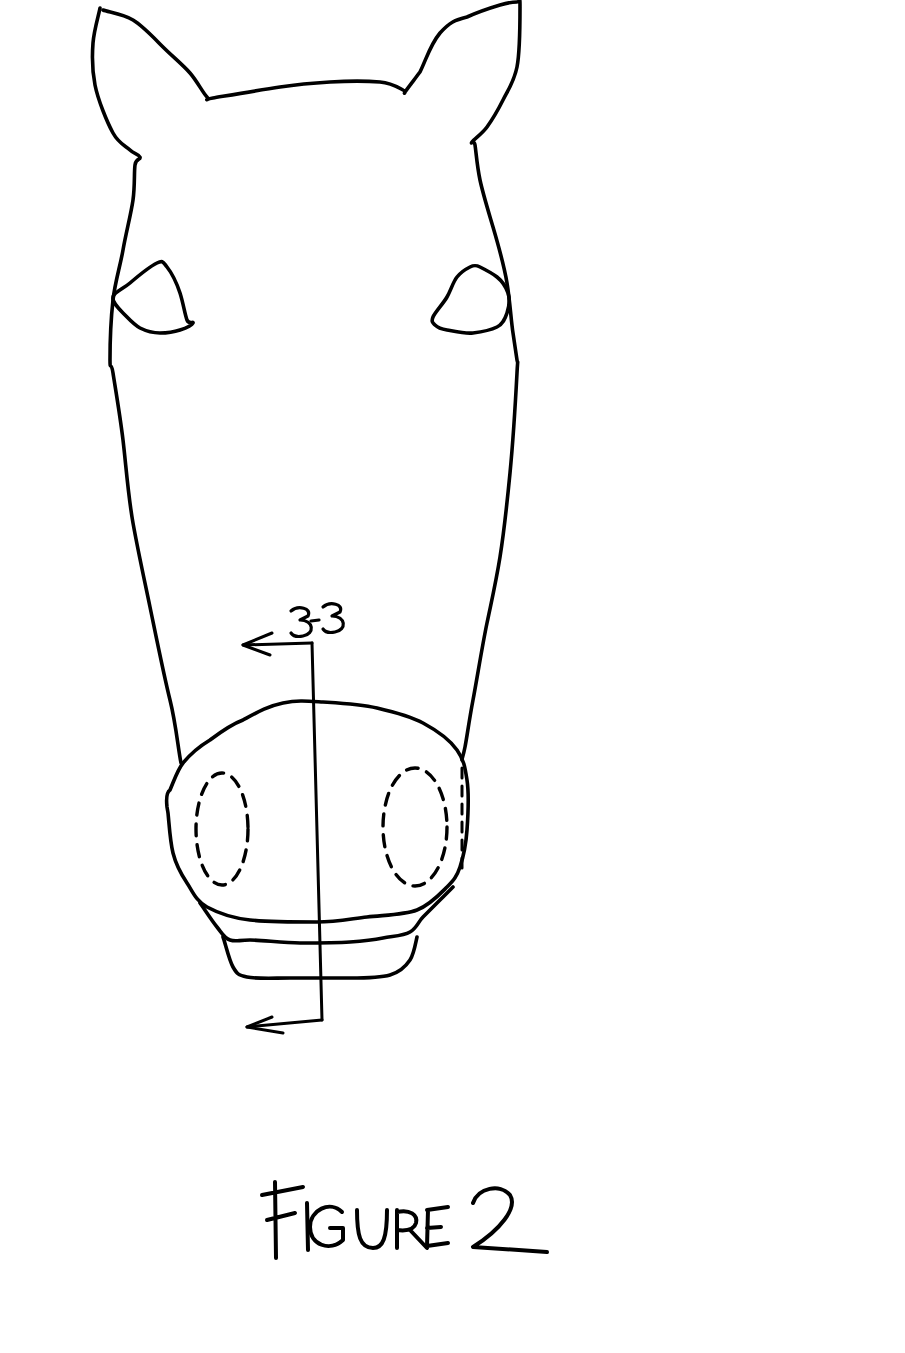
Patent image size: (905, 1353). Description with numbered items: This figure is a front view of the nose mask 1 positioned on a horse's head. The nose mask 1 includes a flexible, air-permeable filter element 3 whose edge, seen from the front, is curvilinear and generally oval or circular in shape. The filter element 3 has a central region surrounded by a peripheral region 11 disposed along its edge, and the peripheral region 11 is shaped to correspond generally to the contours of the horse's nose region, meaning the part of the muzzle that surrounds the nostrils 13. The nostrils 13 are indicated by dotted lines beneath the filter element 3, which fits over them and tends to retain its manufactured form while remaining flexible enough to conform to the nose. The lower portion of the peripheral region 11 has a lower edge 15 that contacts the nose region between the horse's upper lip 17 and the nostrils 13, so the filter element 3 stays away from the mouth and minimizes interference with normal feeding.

The nose mask 1 is at (682, 680).
The peripheral region 11 is at (538, 630).
The nostrils 13 is at (553, 953).
The filter element 3 is at (460, 880).
The lower edge 15 is at (397, 920).
The upper lip 17 is at (262, 943).